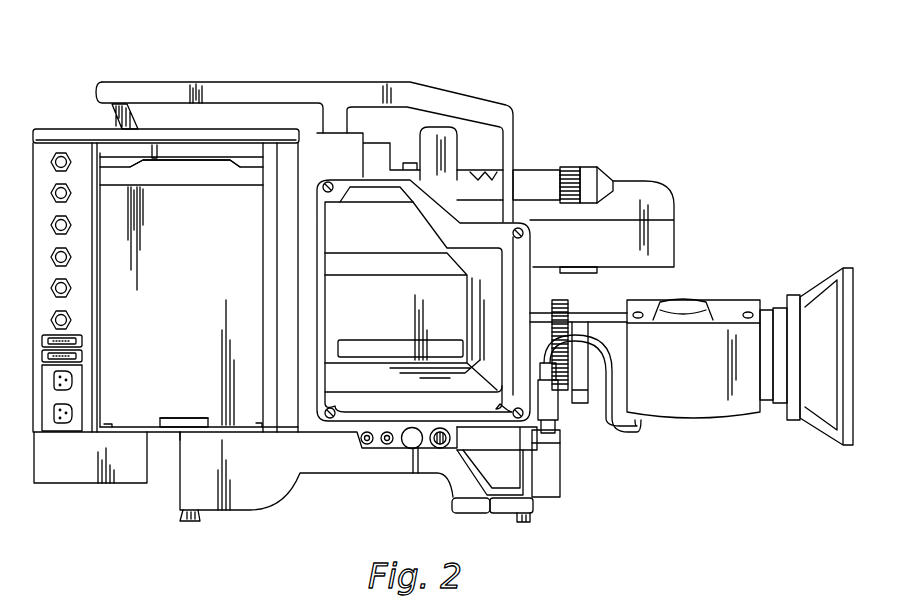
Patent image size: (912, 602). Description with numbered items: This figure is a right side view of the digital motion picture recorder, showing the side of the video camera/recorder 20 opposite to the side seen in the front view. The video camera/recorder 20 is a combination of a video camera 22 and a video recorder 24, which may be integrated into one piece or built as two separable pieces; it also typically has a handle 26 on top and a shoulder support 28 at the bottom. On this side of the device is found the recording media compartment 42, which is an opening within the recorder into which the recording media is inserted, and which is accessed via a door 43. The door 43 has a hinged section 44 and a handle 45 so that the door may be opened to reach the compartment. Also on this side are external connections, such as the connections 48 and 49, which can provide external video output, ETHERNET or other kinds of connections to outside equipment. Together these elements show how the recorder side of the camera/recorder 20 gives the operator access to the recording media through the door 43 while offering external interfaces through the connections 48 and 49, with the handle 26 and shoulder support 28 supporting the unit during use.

The video camera/recorder 20 is at (466, 82).
The video camera 22 is at (491, 241).
The video recorder 24 is at (168, 142).
The handle 26 is at (341, 82).
The shoulder support 28 is at (394, 474).
The recording media compartment 42 is at (116, 192).
The door 43 is at (193, 267).
The hinged section 44 is at (260, 427).
The handle 45 is at (205, 168).
The external connection 48 is at (87, 348).
The external connection 49 is at (79, 389).